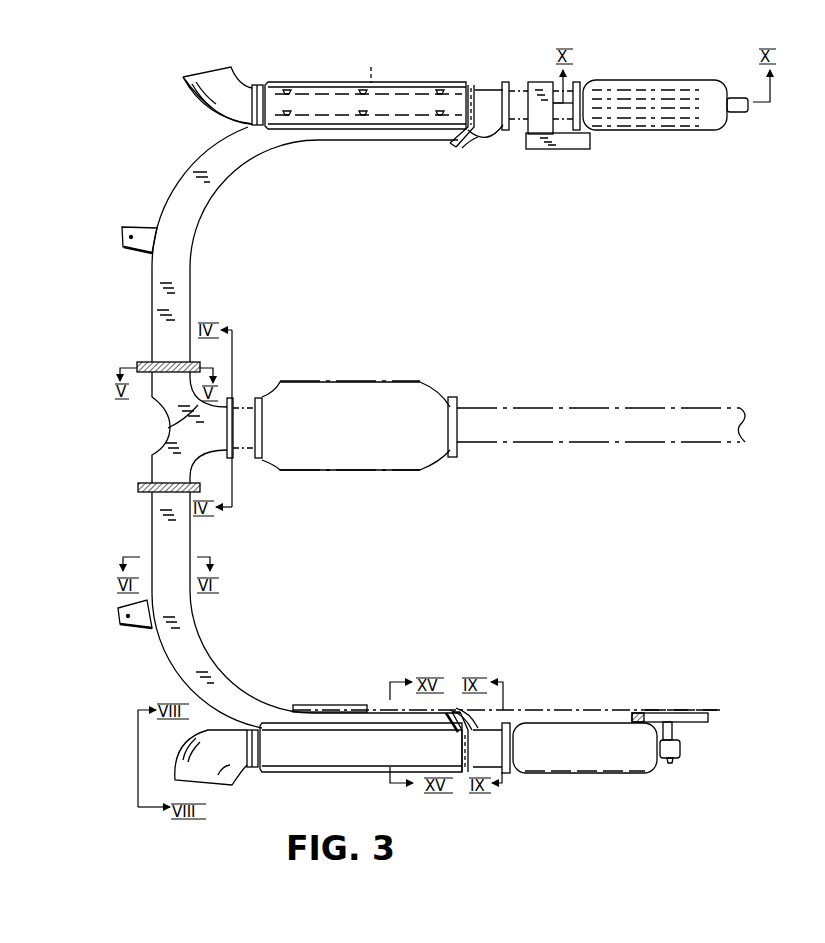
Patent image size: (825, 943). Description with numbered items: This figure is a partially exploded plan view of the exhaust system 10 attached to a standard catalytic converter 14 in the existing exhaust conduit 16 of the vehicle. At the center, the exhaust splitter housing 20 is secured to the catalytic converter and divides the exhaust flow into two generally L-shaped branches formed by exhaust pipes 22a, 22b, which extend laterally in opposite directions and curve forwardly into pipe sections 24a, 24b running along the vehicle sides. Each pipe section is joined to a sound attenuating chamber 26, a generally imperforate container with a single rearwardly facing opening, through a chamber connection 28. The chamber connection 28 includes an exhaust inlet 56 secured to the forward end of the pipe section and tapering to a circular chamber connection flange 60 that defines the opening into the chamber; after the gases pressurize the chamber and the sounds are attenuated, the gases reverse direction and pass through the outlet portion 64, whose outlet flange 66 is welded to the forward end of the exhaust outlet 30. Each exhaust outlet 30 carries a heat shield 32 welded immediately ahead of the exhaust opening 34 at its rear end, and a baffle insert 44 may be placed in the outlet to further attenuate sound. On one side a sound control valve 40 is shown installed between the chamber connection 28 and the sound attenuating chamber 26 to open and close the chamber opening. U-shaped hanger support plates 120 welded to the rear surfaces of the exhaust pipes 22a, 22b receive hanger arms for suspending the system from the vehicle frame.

The exhaust system 10 is at (140, 160).
The catalytic converter 14 is at (425, 382).
The exhaust conduit 16 is at (543, 408).
The exhaust splitter housing 20 is at (143, 470).
The exhaust pipe 22a is at (183, 537).
The exhaust pipe 22b is at (187, 293).
The pipe section 24a is at (375, 708).
The pipe section 24b is at (357, 142).
The sound attenuating chamber 26 is at (633, 131).
The chamber connection 28 is at (487, 91).
The exhaust outlet 30 is at (417, 80).
The heat shield 32 is at (307, 93).
The exhaust opening 34 is at (213, 67).
The sound control valve 40 is at (542, 152).
The baffle insert 44 is at (375, 61).
The exhaust inlet 56 is at (483, 137).
The chamber connection flange 60 is at (452, 710).
The outlet portion 64 is at (497, 760).
The outlet flange 66 is at (472, 87).
The hanger support plate 120 is at (147, 212).